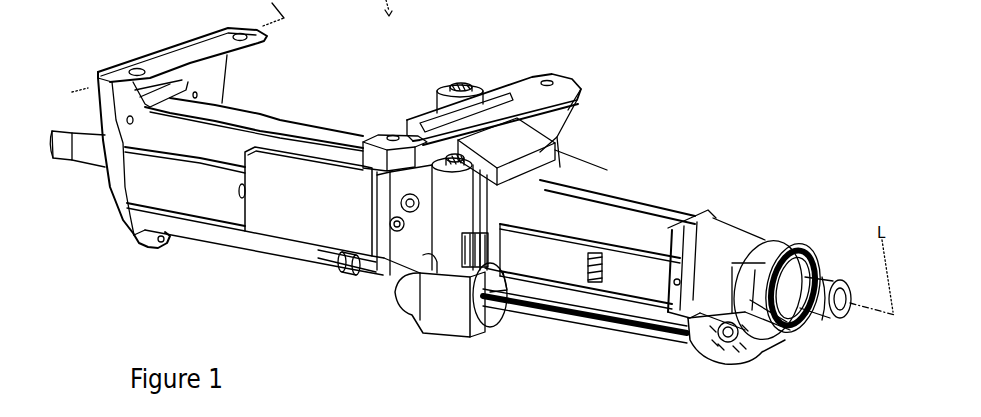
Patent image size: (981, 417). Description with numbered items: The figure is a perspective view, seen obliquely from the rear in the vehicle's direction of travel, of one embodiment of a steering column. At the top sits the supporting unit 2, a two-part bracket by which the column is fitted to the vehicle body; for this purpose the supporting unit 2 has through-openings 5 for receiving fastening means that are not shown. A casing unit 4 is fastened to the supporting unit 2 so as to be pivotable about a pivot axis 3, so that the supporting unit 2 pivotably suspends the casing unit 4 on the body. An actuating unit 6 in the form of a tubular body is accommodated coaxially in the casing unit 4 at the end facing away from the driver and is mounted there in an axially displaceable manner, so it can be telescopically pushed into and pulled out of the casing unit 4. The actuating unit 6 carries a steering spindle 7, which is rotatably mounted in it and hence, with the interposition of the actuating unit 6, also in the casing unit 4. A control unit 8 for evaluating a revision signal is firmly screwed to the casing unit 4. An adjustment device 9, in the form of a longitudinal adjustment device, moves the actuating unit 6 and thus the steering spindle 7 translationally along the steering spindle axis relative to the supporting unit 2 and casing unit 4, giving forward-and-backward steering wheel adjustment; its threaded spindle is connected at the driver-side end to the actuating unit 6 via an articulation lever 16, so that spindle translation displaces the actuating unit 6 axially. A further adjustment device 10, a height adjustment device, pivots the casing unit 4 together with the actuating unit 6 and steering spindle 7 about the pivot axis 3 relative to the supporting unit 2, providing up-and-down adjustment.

The supporting unit 2 is at (581, 88).
The pivot axis 3 is at (77, 149).
The casing unit 4 is at (325, 134).
The through-openings 5 is at (547, 80).
The actuating unit 6 is at (647, 210).
The steering spindle 7 is at (800, 265).
The control unit 8 is at (277, 197).
The adjustment device 9 is at (381, 306).
The adjustment device 10 is at (621, 106).
The articulation lever 16 is at (780, 338).